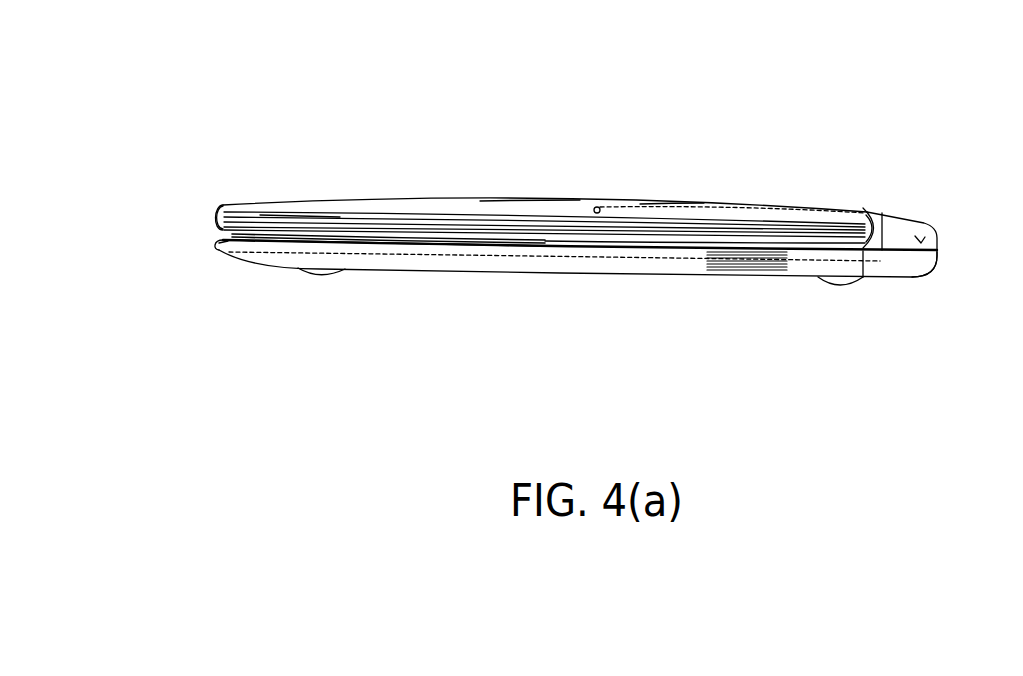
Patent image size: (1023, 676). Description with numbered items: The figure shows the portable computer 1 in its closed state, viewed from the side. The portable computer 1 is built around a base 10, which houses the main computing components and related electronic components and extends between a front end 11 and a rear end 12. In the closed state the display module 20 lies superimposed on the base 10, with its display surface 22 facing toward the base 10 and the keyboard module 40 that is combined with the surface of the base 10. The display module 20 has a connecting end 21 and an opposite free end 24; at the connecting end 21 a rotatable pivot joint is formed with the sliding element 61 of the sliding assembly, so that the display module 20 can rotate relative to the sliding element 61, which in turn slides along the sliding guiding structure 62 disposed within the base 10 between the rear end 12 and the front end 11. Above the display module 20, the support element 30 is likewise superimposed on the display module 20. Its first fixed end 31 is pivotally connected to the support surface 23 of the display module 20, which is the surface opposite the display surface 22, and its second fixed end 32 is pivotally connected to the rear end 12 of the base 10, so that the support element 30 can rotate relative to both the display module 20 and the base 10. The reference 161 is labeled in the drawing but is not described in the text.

The portable computer 1 is at (968, 60).
The base 10 is at (258, 269).
The front end 11 is at (221, 245).
The rear end 12 is at (938, 257).
The display module 20 is at (396, 207).
The connecting end 21 is at (866, 206).
The display surface 22 is at (280, 228).
The support surface 23 is at (527, 200).
The free end 24 is at (214, 215).
The support element 30 is at (745, 197).
The first fixed end 31 is at (597, 207).
The second fixed end 32 is at (920, 236).
The keyboard module 40 is at (378, 242).
The sliding element 61 is at (863, 279).
The sliding guiding structure 62 is at (692, 257).
The protrusion 161 is at (672, 172).